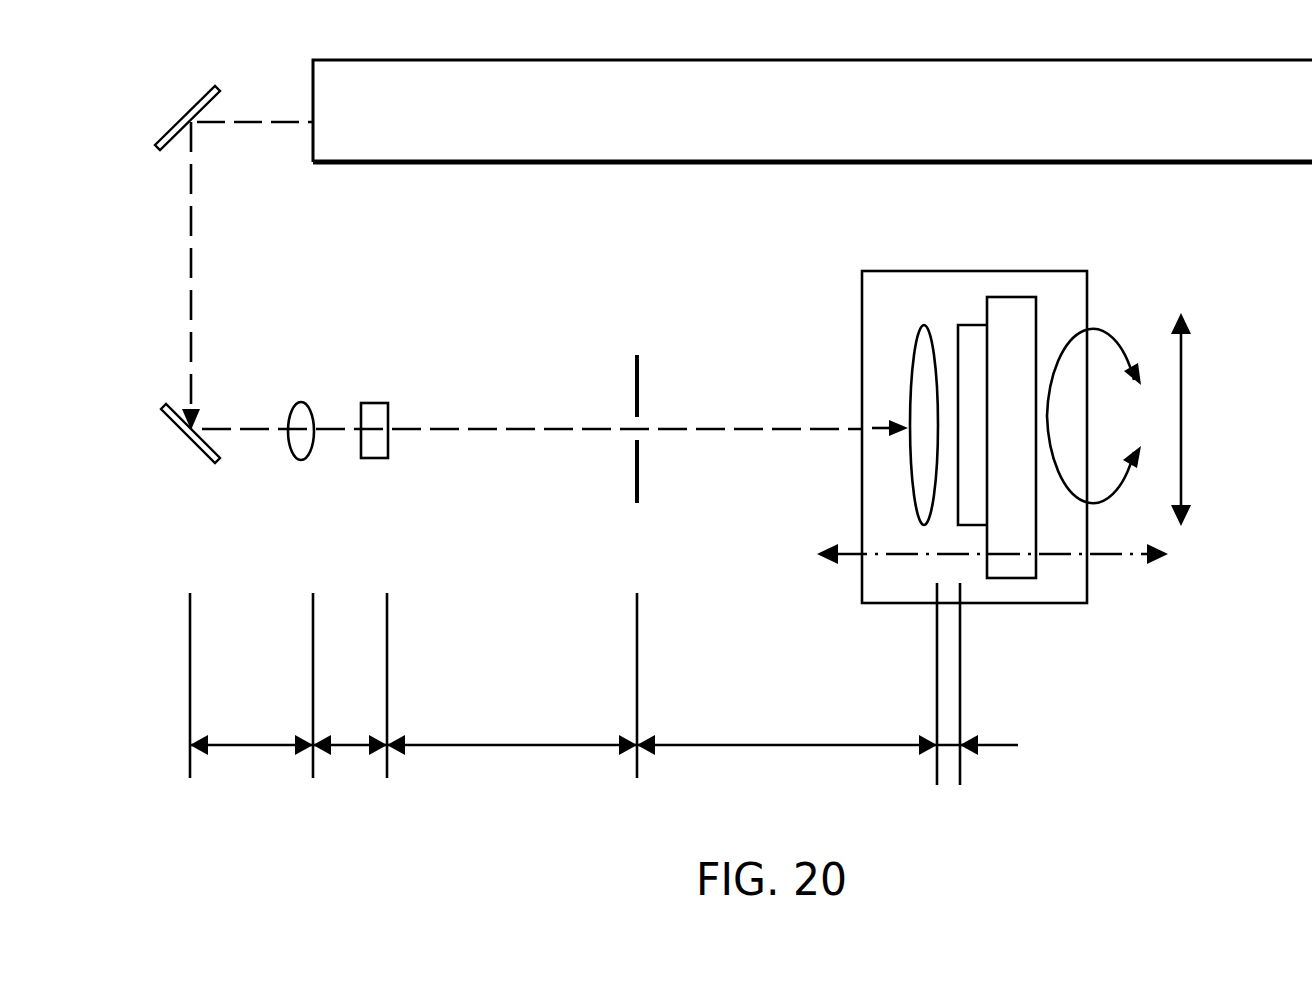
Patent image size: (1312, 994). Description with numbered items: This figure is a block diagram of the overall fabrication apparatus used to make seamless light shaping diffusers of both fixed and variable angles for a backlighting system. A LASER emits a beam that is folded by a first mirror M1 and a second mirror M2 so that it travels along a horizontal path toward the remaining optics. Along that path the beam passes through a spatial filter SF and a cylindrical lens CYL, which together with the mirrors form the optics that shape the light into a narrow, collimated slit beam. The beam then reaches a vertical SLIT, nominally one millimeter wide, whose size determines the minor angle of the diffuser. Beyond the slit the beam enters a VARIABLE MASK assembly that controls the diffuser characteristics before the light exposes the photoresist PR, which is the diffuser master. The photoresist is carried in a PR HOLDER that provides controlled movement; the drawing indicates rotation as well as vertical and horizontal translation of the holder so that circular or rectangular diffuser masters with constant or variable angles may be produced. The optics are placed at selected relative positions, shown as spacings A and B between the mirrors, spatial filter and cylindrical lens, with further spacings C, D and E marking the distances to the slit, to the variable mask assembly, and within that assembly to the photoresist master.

The laser LASER is at (812, 111).
The mirror M1 is at (181, 111).
The mirror M2 is at (184, 442).
The spatial filter SF is at (296, 395).
The cylindrical lens CYL is at (368, 394).
The vertical slit SLIT is at (630, 411).
The variable mask VARIABLE MASK is at (913, 416).
The photoresist PR is at (968, 377).
The photoresist holder PR HOLDER is at (1004, 403).
The relative position A is at (251, 732).
The relative position B is at (350, 732).
The relative position C is at (512, 732).
The relative position D is at (787, 732).
The relative position E is at (948, 742).